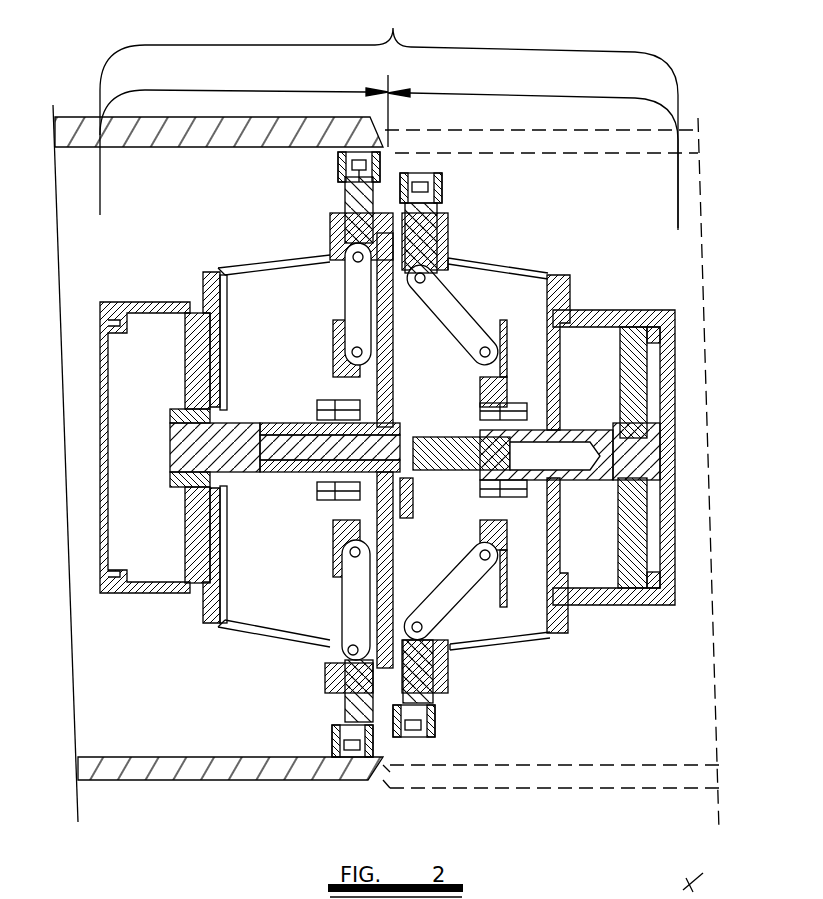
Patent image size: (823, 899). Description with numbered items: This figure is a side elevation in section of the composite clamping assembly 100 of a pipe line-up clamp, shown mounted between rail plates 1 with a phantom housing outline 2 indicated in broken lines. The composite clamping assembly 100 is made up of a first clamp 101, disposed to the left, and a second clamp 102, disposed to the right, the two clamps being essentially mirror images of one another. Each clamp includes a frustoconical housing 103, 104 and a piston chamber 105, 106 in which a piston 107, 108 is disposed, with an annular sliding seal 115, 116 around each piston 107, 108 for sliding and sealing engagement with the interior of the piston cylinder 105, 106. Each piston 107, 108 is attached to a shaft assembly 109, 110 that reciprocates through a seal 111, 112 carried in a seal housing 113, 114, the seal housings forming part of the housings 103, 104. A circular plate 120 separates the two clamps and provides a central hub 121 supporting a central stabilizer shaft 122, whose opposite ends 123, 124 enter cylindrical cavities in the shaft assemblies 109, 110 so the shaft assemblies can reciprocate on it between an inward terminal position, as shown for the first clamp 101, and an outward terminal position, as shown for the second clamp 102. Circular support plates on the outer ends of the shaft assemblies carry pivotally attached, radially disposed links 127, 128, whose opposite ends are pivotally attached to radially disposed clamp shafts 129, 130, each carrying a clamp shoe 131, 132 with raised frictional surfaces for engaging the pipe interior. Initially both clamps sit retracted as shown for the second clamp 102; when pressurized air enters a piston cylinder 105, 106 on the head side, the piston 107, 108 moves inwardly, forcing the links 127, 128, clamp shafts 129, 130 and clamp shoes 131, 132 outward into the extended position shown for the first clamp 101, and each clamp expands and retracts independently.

The rail plate 1 is at (272, 770).
The phantom housing 2 is at (528, 786).
The composite clamping assembly 100 is at (389, 116).
The first clamp 101 is at (244, 105).
The second clamp 102 is at (533, 148).
The frustoconical housing 103 is at (256, 268).
The frustoconical housing 104 is at (520, 262).
The piston chamber 105 is at (165, 300).
The piston chamber 106 is at (612, 308).
The piston 107 is at (182, 380).
The piston 108 is at (622, 393).
The shaft assembly 109 is at (289, 418).
The shaft assembly 110 is at (432, 432).
The seal 111 is at (247, 420).
The seal 112 is at (553, 405).
The seal housing 113 is at (243, 480).
The seal housing 114 is at (548, 482).
The annular sliding seal 115 is at (193, 300).
The annular sliding seal 116 is at (640, 325).
The circular plate 120 is at (393, 335).
The central hub 121 is at (397, 482).
The central stabilizer shaft 122 is at (403, 470).
The end of stabilizer shaft 123 is at (277, 482).
The end of stabilizer shaft 124 is at (443, 480).
The link 127 is at (345, 290).
The link 128 is at (450, 305).
The clamp shaft 129 is at (345, 210).
The clamp shaft 130 is at (440, 215).
The clamp shoe 131 is at (338, 166).
The clamp shoe 132 is at (442, 185).